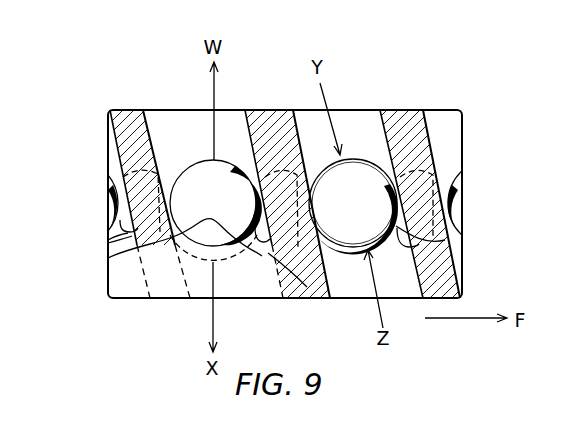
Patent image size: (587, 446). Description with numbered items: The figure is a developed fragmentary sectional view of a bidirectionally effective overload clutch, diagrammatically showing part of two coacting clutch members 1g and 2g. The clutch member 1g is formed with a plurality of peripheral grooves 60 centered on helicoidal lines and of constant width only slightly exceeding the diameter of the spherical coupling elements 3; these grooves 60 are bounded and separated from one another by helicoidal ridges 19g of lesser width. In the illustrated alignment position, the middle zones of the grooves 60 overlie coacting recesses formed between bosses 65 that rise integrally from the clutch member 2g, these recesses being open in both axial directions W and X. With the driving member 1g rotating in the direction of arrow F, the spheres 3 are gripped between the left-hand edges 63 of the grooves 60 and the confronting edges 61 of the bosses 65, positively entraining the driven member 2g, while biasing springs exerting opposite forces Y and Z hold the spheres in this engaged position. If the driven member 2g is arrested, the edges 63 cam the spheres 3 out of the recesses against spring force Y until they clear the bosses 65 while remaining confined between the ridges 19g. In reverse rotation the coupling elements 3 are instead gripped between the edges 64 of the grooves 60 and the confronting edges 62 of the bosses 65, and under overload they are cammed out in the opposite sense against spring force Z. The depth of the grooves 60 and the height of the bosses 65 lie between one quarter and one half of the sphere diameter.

The clutch member 1g is at (120, 282).
The clutch member 2g is at (448, 132).
The spherical coupling elements 3 is at (191, 170).
The helicoidal ridges 19g is at (262, 113).
The peripheral grooves 60 is at (190, 120).
The edges of bosses 61 is at (262, 246).
The edges of bosses 62 is at (480, 247).
The left-hand edges of grooves 63 is at (150, 113).
The edges of grooves 64 is at (232, 117).
The bosses 65 is at (127, 236).